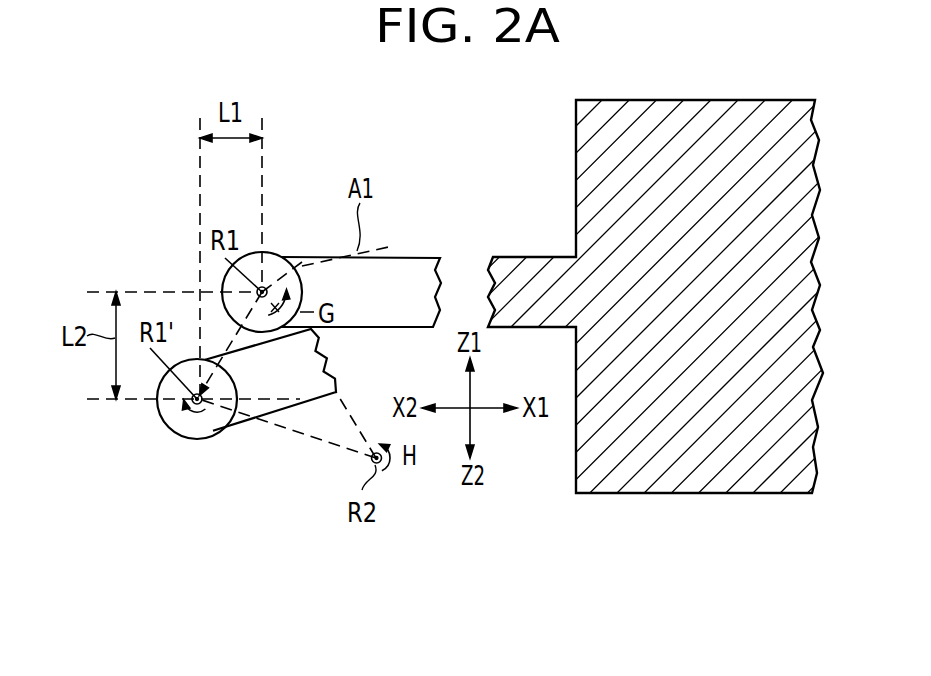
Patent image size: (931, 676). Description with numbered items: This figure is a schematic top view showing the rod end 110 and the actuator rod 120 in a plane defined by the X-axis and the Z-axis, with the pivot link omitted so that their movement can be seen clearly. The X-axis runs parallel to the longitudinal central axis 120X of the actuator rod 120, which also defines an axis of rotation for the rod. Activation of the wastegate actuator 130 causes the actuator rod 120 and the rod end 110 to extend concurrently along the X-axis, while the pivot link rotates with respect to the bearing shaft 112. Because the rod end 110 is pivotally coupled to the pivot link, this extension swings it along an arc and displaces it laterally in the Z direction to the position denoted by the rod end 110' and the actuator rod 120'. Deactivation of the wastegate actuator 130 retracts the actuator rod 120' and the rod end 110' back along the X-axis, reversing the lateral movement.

The rod end 110 is at (257, 251).
The bearing shaft 112 is at (264, 287).
The actuator rod 120 is at (367, 251).
The longitudinal central axis 120X is at (168, 291).
The rod end 110' is at (164, 402).
The actuator rod 120' is at (270, 409).
The wastegate actuator 130 is at (661, 492).